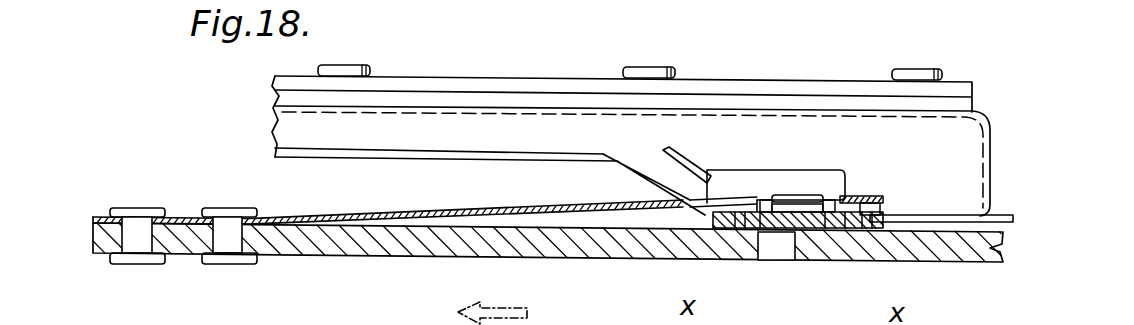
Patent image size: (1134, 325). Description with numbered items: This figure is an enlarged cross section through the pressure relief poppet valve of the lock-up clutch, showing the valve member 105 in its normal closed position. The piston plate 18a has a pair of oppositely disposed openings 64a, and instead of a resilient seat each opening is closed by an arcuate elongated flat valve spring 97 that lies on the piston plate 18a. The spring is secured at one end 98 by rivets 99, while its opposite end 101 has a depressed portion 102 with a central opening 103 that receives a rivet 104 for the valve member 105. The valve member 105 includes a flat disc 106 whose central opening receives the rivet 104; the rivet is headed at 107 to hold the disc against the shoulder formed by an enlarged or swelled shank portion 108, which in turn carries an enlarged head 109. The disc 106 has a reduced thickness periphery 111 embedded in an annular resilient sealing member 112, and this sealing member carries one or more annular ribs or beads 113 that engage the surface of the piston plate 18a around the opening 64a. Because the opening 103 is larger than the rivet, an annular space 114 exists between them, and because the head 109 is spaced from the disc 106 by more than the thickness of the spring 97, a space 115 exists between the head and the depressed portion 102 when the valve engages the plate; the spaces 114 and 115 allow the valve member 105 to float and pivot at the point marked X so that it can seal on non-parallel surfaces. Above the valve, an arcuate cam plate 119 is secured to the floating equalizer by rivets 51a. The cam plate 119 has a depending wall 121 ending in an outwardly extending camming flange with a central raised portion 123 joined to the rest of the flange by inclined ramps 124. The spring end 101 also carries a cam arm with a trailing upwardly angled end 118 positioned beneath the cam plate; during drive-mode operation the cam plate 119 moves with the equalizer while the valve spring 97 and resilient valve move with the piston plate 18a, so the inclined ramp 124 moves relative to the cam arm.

The piston plate 18a is at (563, 243).
The rivets 51a is at (345, 64).
The openings 64a is at (830, 228).
The valve spring 97 is at (536, 182).
The end of valve spring 98 is at (178, 222).
The rivets 99 is at (226, 265).
The opposite end of spring arm 101 is at (872, 200).
The depressed portion 102 is at (833, 207).
The central opening 103 is at (818, 207).
The rivet 104 is at (776, 246).
The valve member 105 is at (845, 228).
The flat disc 106 is at (758, 228).
The headed portion of rivet 107 is at (800, 232).
The enlarged shank portion 108 is at (792, 200).
The enlarged head 109 is at (806, 200).
The reduced thickness periphery 111 is at (750, 226).
The annular resilient sealing member 112 is at (878, 215).
The annular ribs or beads 113 is at (862, 238).
The annular space 114 is at (762, 200).
The space 115 is at (778, 203).
The trailing upwardly angled end 118 is at (664, 152).
The cam plate 119 is at (446, 108).
The depending wall 121 is at (490, 128).
The central raised portion 123 is at (318, 154).
The inclined ramps 124 is at (633, 172).